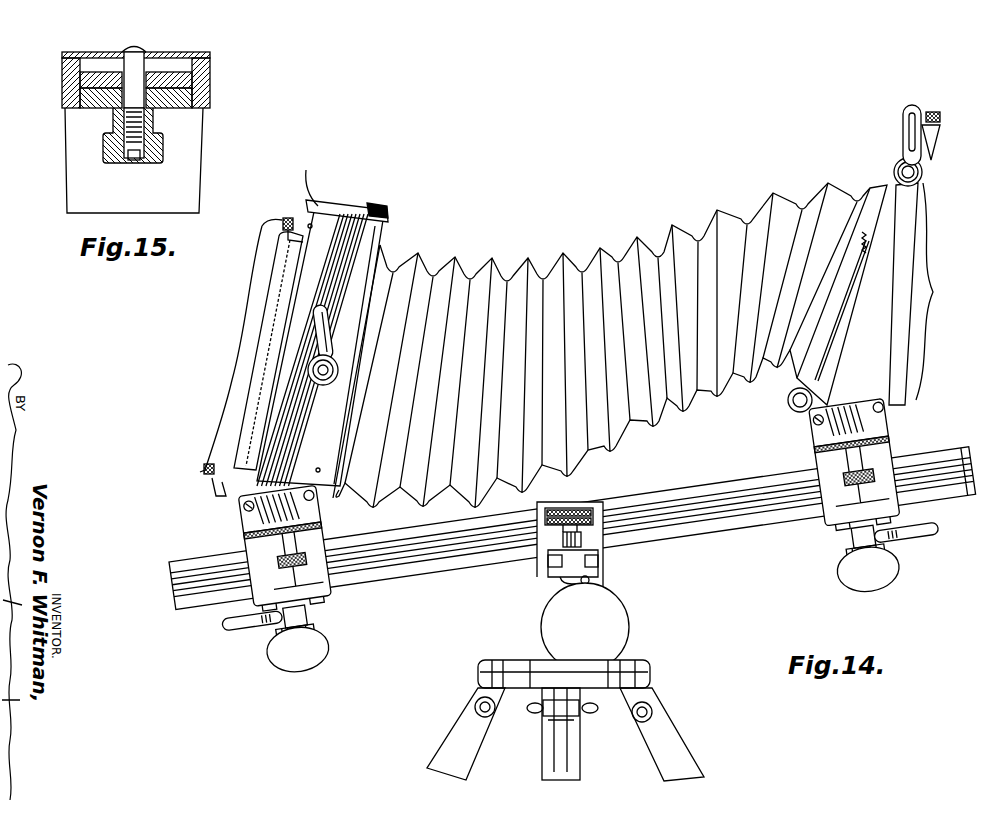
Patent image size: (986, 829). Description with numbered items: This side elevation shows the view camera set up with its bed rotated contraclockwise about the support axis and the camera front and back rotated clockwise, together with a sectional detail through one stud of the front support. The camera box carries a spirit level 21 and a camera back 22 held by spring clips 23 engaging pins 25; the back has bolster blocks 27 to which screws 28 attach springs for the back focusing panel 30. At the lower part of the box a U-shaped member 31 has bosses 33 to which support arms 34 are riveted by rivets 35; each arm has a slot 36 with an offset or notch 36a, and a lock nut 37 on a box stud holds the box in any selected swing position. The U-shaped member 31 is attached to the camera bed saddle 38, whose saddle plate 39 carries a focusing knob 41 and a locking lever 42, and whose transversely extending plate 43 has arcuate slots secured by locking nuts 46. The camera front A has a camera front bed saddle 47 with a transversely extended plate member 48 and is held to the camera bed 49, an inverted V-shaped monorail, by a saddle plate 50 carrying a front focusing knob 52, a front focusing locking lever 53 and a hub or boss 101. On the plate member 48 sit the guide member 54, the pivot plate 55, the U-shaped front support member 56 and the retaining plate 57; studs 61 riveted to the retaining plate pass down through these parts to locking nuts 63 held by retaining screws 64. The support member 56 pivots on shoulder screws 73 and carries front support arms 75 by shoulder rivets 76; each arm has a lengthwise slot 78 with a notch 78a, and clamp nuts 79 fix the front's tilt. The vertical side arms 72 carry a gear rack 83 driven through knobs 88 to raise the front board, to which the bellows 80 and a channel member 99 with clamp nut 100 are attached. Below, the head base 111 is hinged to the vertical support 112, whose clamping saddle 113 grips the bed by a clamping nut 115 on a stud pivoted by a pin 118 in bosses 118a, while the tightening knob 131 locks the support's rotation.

In FIG. 14, the spirit level 21 is at (380, 204).
In FIG. 14, the camera back 22 is at (230, 326).
In FIG. 14, the spring clips 23 is at (304, 180).
In FIG. 14, the pins 25 is at (328, 203).
In FIG. 14, the bolster blocks 27 is at (222, 488).
In FIG. 14, the screws 28 is at (283, 222).
In FIG. 14, the back focusing panel 30 is at (268, 337).
In FIG. 14, the U-shaped member 31 is at (312, 512).
In FIG. 14, the boss 33 is at (318, 468).
In FIG. 14, the support arms 34 is at (328, 425).
In FIG. 14, the rivets 35 is at (312, 488).
In FIG. 14, the slot 36 is at (330, 345).
In FIG. 14, the offset or notch 36a is at (336, 330).
In FIG. 14, the lock nut 37 is at (331, 375).
In FIG. 14, the camera bed saddle 38 is at (315, 545).
In FIG. 14, the saddle plate 39 is at (325, 592).
In FIG. 14, the focusing knob 41 is at (320, 648).
In FIG. 14, the locking lever 42 is at (246, 630).
In FIG. 14, the transversely extending plate 43 is at (243, 538).
In FIG. 14, the locking nuts 46 is at (270, 563).
In FIG. 14, the camera front bed saddle 47 is at (820, 465).
In FIG. 15, the transversely extended plate member 48 is at (62, 95).
In FIG. 14, the transversely extended plate member 48 is at (888, 445).
In FIG. 14, the camera bed 49 is at (660, 494).
In FIG. 14, the saddle plate 50 is at (898, 514).
In FIG. 14, the front focusing knob 52 is at (898, 567).
In FIG. 14, the front focusing locking lever 53 is at (930, 530).
In FIG. 15, the guide member 54 is at (208, 83).
In FIG. 15, the pivot plate 55 is at (62, 80).
In FIG. 15, the U-shaped front support member 56 is at (62, 66).
In FIG. 15, the retaining plate 57 is at (186, 57).
In FIG. 14, the retaining plate 57 is at (890, 425).
In FIG. 15, the studs 61 is at (128, 95).
In FIG. 15, the locking nuts 63 is at (158, 148).
In FIG. 14, the locking nuts 63 is at (848, 478).
In FIG. 15, the retaining screws 64 is at (138, 158).
In FIG. 14, the vertical side arms 72 is at (842, 386).
In FIG. 14, the shoulder screw 73 is at (812, 418).
In FIG. 14, the front support arm 75 is at (890, 360).
In FIG. 14, the shoulder rivet 76 is at (893, 407).
In FIG. 14, the lengthwise slot 78 is at (904, 154).
In FIG. 14, the offset or notch 78a is at (908, 130).
In FIG. 14, the clamp nuts 79 is at (923, 172).
In FIG. 14, the bellows 80 is at (570, 262).
In FIG. 14, the gear rack 83 is at (865, 238).
In FIG. 14, the knobs 88 is at (788, 403).
In FIG. 14, the channel member 99 is at (934, 136).
In FIG. 14, the clamp nut 100 is at (936, 114).
In FIG. 14, the hub or boss 101 is at (305, 610).
In FIG. 14, the head base 111 is at (652, 670).
In FIG. 14, the vertical support 112 is at (606, 568).
In FIG. 14, the clamping saddle 113 is at (592, 505).
In FIG. 14, the clamping nut 115 is at (562, 508).
In FIG. 14, the pin 118 is at (560, 580).
In FIG. 14, the bosses 118a is at (548, 568).
In FIG. 14, the tightening knob 131 is at (622, 628).
In FIG. 14, the camera front A is at (933, 291).